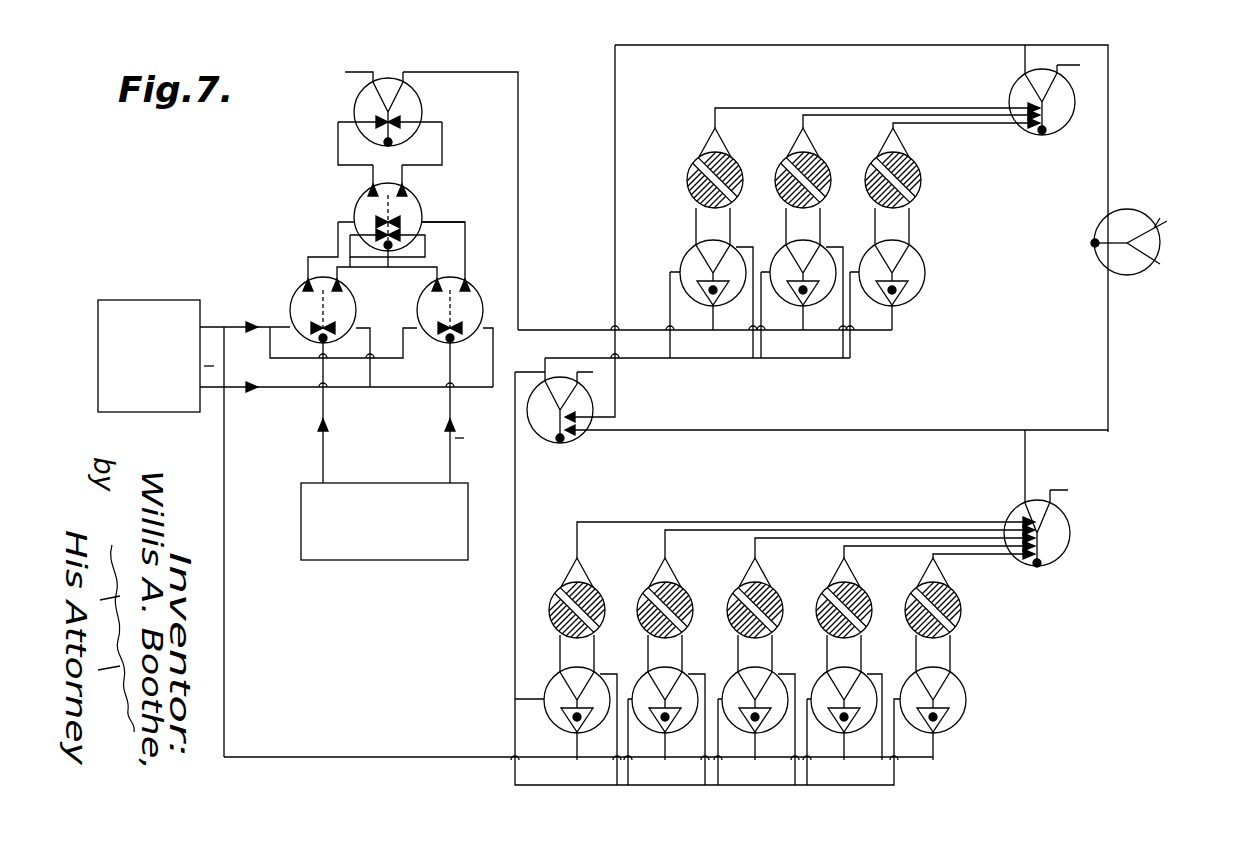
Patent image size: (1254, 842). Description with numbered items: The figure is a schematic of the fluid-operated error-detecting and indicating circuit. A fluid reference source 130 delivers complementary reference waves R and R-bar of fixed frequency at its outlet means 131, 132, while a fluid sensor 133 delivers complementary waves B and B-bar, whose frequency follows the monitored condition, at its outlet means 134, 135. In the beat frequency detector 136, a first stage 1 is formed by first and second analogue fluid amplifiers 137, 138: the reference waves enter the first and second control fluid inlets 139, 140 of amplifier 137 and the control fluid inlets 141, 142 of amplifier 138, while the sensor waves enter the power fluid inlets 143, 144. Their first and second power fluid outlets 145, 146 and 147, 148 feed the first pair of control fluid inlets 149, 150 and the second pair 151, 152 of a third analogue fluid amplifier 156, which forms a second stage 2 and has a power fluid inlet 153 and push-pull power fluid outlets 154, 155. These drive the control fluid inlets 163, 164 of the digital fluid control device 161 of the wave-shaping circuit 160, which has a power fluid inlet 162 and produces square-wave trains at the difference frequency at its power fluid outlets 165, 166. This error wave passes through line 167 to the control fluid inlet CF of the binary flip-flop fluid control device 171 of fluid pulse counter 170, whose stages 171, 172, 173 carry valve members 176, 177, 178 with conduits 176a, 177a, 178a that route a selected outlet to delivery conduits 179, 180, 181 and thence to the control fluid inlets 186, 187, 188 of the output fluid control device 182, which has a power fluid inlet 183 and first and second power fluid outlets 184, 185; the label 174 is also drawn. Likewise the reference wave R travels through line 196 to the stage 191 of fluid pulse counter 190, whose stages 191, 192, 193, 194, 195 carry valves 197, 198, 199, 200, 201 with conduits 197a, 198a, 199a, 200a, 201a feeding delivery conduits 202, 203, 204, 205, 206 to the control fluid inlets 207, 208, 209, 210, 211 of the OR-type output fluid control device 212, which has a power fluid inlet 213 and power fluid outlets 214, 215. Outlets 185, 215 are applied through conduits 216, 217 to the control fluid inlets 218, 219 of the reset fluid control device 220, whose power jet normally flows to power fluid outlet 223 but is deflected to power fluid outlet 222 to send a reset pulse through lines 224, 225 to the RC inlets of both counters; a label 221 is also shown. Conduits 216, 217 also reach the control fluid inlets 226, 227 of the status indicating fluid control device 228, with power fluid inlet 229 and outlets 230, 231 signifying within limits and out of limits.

The fluid reference source 130 is at (122, 300).
The outlet means 131 is at (200, 300).
The outlet means 132 is at (190, 412).
The fluid sensor 133 is at (314, 560).
The outlet means 134 is at (325, 484).
The outlet means 135 is at (452, 484).
The fluid-operated beat frequency detector 136 is at (351, 212).
The first analogue fluid amplifier 137 is at (292, 296).
The second analogue fluid amplifier 138 is at (478, 292).
The first control fluid inlet 139 is at (290, 320).
The second control fluid inlet 140 is at (360, 318).
The first control fluid inlet 141 is at (414, 332).
The second control fluid inlet 142 is at (483, 322).
The power fluid inlet 143 is at (328, 340).
The power fluid inlet 144 is at (455, 341).
The first power fluid outlet 145 is at (342, 280).
The second power fluid outlet 146 is at (308, 278).
The first power fluid outlet 147 is at (438, 280).
The second power fluid outlet 148 is at (466, 279).
The control fluid inlet 149 is at (348, 222).
The control fluid inlet 150 is at (352, 234).
The control fluid inlet 151 is at (418, 237).
The control fluid inlet 152 is at (420, 222).
The power fluid inlet 153 is at (389, 250).
The first power fluid outlet 154 is at (412, 185).
The second power fluid outlet 155 is at (370, 186).
The third analogue fluid amplifier 156 is at (420, 204).
The wave-shaping circuit 160 is at (372, 112).
The digital fluid control device 161 is at (416, 100).
The power fluid inlet 162 is at (390, 144).
The control fluid inlet 163 is at (338, 130).
The control fluid inlet 164 is at (442, 130).
The power fluid outlet 165 is at (368, 63).
The power fluid outlet 166 is at (402, 76).
The line 167 is at (470, 72).
The fluid pulse counter 170 is at (666, 115).
The binary flip-flop fluid control device 171 is at (683, 251).
The binary flip-flop fluid control device 172 is at (780, 246).
The binary flip-flop fluid control device 173 is at (918, 250).
The amplifier output 174 is at (707, 306).
The valve member 176 is at (690, 168).
The conduit 176a is at (700, 196).
The valve member 177 is at (784, 168).
The conduit 177a is at (818, 200).
The valve member 178 is at (876, 166).
The conduit 178a is at (912, 198).
The delivery conduit 179 is at (754, 106).
The delivery conduit 180 is at (826, 113).
The delivery conduit 181 is at (924, 120).
The output fluid control device 182 is at (1072, 108).
The power fluid inlet 183 is at (1042, 134).
The first power fluid outlet 184 is at (1055, 70).
The second power fluid outlet 185 is at (1018, 70).
The control fluid inlet 186 is at (1012, 103).
The control fluid inlet 187 is at (1002, 127).
The control fluid inlet 188 is at (1014, 122).
The fluid pulse counter 190 is at (1060, 599).
The binary flip-flop fluid control device 191 is at (548, 690).
The binary flip-flop fluid control device 192 is at (640, 676).
The binary flip-flop fluid control device 193 is at (730, 676).
The binary flip-flop fluid control device 194 is at (820, 676).
The binary flip-flop fluid control device 195 is at (910, 676).
The line 196 is at (404, 756).
The valve 197 is at (552, 596).
The conduit 197a is at (590, 590).
The valve 198 is at (640, 612).
The conduit 198a is at (652, 585).
The valve 199 is at (730, 600).
The conduit 199a is at (742, 586).
The valve 200 is at (818, 606).
The conduit 200a is at (830, 590).
The valve 201 is at (908, 608).
The conduit 201a is at (918, 590).
The delivery conduit 202 is at (712, 520).
The delivery conduit 203 is at (766, 529).
The delivery conduit 204 is at (820, 536).
The delivery conduit 205 is at (860, 545).
The delivery conduit 206 is at (955, 556).
The control fluid inlet 207 is at (1000, 528).
The control fluid inlet 208 is at (1003, 532).
The control fluid inlet 209 is at (1008, 534).
The control fluid inlet 210 is at (1010, 550).
The control fluid inlet 211 is at (1015, 556).
The output fluid control device 212 is at (1070, 533).
The power fluid inlet 213 is at (1060, 560).
The first power fluid outlet 214 is at (1066, 505).
The second power fluid outlet 215 is at (1026, 500).
The conduit 216 is at (873, 45).
The conduit 217 is at (722, 430).
The control fluid inlet 218 is at (594, 426).
The control fluid inlet 219 is at (585, 438).
The reset fluid control device 220 is at (541, 437).
The amplifier output 221 is at (563, 444).
The power fluid outlet 222 is at (542, 376).
The power fluid outlet 223 is at (580, 379).
The line 224 is at (722, 358).
The line 225 is at (515, 530).
The control fluid inlet 226 is at (1103, 216).
The control fluid inlet 227 is at (1104, 268).
The status indicating fluid control device 228 is at (1090, 254).
The power fluid inlet 229 is at (1090, 240).
The first power fluid outlet 230 is at (1158, 232).
The second power fluid outlet 231 is at (1148, 270).
The first stage 1 is at (282, 280).
The second stage 2 is at (440, 212).